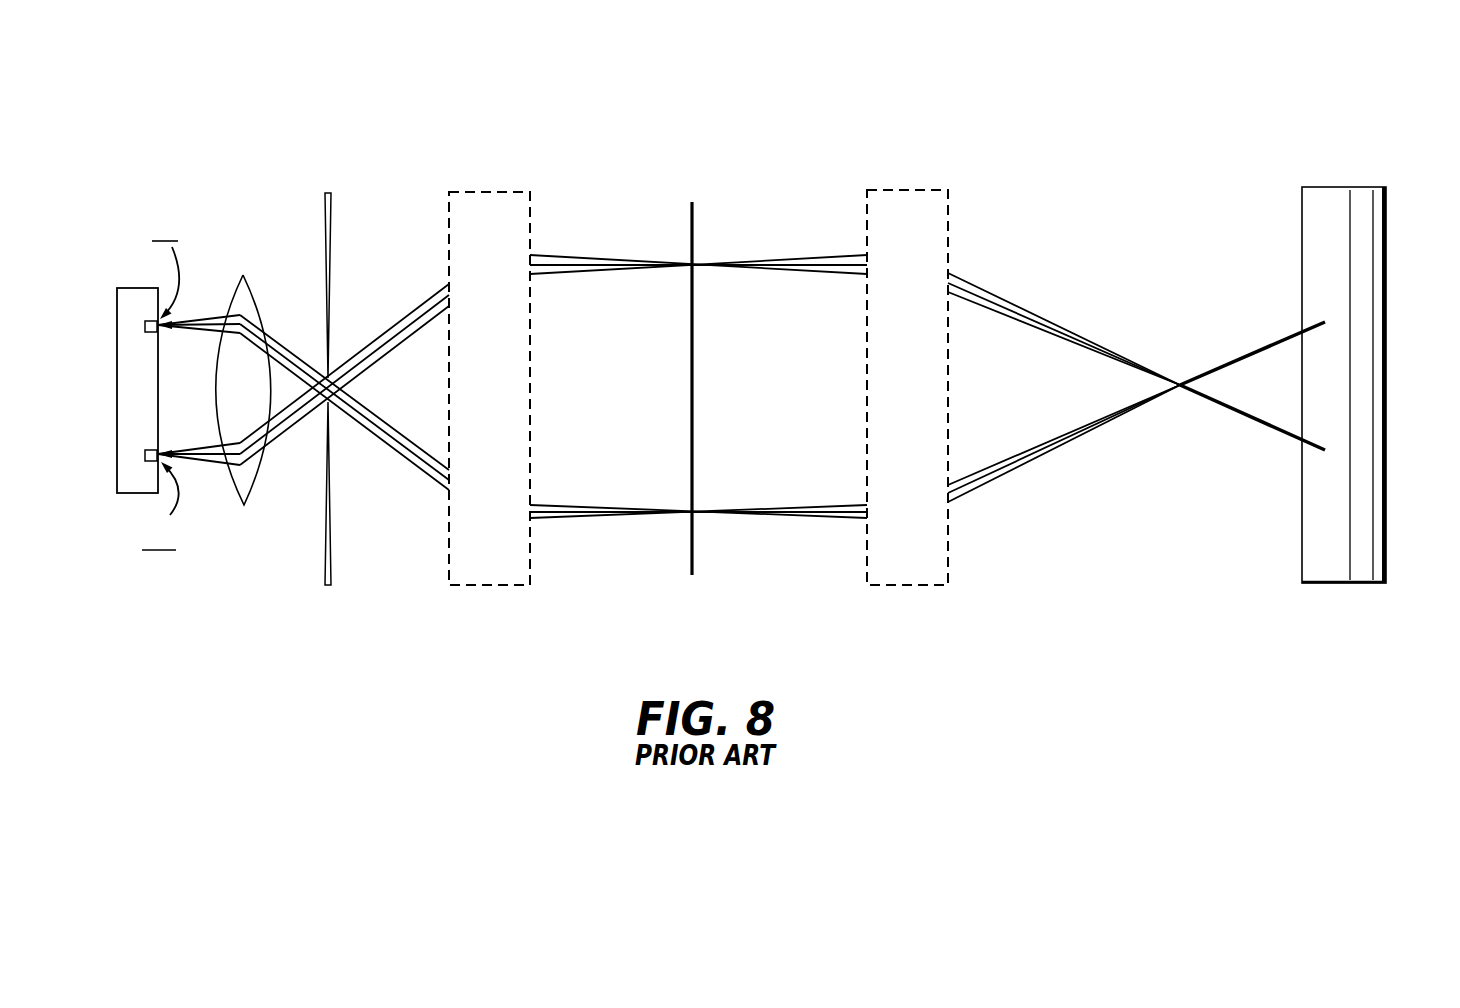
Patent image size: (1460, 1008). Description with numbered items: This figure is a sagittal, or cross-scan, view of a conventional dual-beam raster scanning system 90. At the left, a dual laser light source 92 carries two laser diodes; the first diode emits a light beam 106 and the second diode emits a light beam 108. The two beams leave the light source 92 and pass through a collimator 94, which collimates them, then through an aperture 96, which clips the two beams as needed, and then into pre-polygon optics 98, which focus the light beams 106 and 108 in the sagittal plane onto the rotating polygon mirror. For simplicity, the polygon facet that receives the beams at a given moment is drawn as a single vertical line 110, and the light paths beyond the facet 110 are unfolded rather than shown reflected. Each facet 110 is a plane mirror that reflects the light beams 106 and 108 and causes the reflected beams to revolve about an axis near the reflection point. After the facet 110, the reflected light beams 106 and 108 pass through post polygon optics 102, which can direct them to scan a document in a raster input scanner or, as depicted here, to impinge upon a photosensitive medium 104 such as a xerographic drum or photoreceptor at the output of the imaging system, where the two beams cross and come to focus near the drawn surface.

The raster scanning system 90 is at (517, 105).
The dual laser light source 92 is at (142, 287).
The collimator 94 is at (257, 483).
The aperture 96 is at (334, 552).
The pre-polygon optics 98 is at (537, 550).
The post polygon optics 102 is at (896, 186).
The photosensitive medium 104 is at (1386, 252).
The light beam 106 is at (191, 316).
The light beam 108 is at (192, 463).
The facet 110 is at (697, 538).